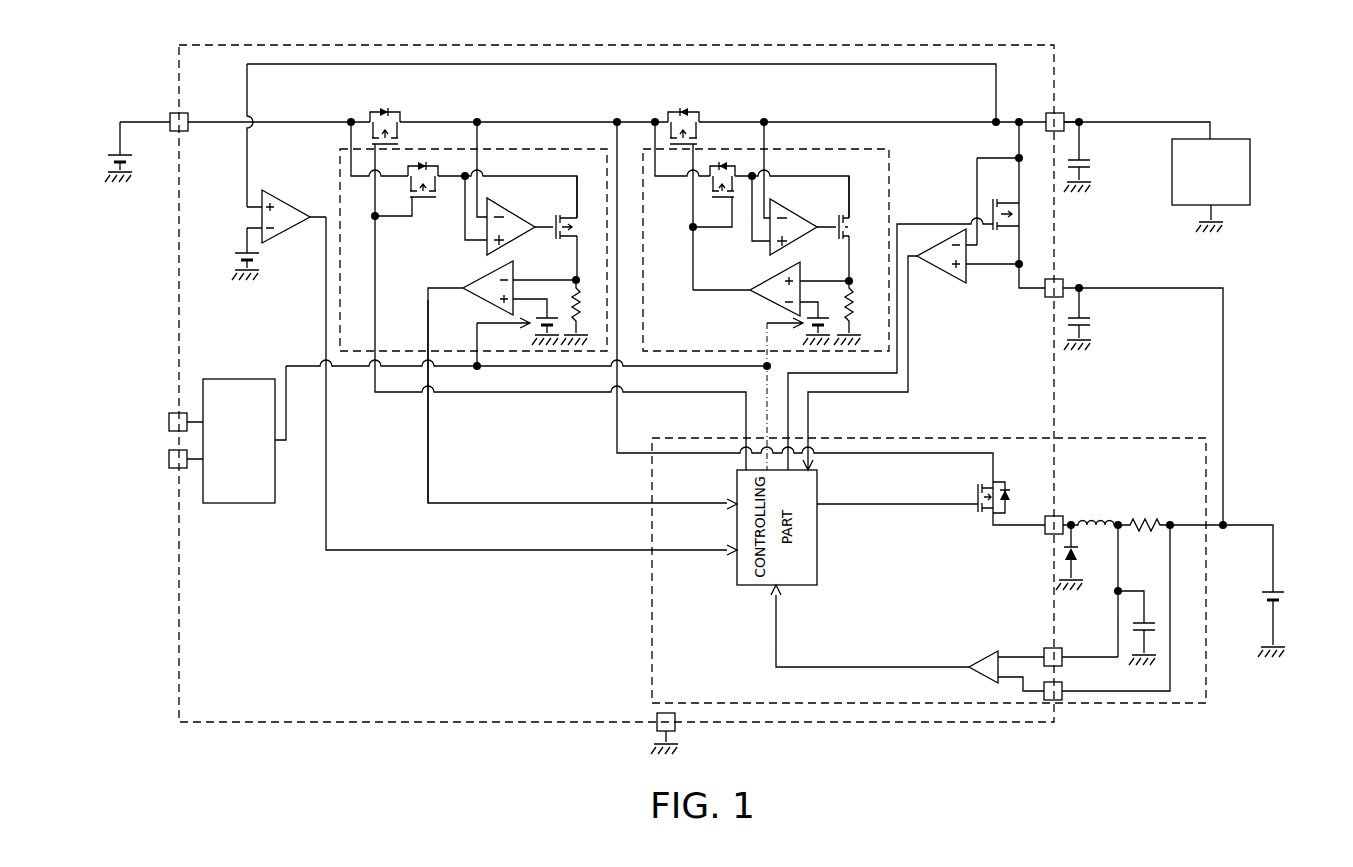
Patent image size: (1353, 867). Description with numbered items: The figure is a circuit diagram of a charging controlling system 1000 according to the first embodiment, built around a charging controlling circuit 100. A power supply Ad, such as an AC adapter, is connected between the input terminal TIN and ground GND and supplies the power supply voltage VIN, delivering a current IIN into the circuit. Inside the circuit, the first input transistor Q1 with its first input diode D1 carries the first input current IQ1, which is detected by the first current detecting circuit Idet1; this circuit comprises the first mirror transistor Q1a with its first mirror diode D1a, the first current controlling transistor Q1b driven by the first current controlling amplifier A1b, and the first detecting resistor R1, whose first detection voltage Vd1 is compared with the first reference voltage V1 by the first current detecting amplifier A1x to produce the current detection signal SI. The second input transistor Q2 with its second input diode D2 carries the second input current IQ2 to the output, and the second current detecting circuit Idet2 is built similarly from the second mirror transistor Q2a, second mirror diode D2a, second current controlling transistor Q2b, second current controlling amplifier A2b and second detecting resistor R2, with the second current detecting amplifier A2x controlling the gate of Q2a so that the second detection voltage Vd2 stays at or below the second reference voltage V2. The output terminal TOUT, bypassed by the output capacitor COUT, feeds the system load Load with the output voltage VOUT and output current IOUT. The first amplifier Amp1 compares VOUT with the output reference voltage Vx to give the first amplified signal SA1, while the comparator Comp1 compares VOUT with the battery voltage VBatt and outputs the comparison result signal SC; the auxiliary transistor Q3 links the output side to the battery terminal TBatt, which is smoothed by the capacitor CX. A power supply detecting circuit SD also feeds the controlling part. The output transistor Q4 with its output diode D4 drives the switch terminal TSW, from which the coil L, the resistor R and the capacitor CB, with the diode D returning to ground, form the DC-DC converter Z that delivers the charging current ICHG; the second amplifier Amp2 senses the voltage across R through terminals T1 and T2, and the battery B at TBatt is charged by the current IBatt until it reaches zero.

The charging controlling circuit 100 is at (178, 62).
The charging controlling system 1000 is at (788, 767).
The current from the power supply IIN is at (150, 93).
The power supply Ad is at (117, 153).
The power supply voltage VIN is at (145, 108).
The input terminal TIN is at (178, 131).
The first amplifier Amp1 is at (284, 189).
The output reference voltage Vx is at (233, 254).
The first input diode D1 is at (380, 110).
The first input current IQ1 is at (395, 98).
The first mirror diode D1a is at (426, 162).
The first input transistor Q1 is at (399, 130).
The first current detecting circuit Idet1 is at (514, 149).
The first current controlling amplifier A1b is at (502, 198).
The first current controlling transistor Q1b is at (553, 228).
The first mirror transistor Q1a is at (413, 196).
The first current detecting amplifier A1x is at (480, 268).
The first detection voltage Vd1 is at (544, 269).
The first reference voltage V1 is at (526, 330).
The first detecting resistor R1 is at (585, 314).
The second input diode D2 is at (680, 110).
The second input current IQ2 is at (695, 98).
The second mirror diode D2a is at (727, 163).
The second input transistor Q2 is at (698, 130).
The second current detecting circuit Idet2 is at (796, 149).
The second current controlling amplifier A2b is at (786, 199).
The second current controlling transistor Q2b is at (834, 228).
The second mirror transistor Q2a is at (714, 196).
The second current detecting amplifier A2x is at (768, 270).
The second detection voltage Vd2 is at (824, 269).
The second reference voltage V2 is at (806, 382).
The second detecting resistor R2 is at (857, 315).
The power supply detecting circuit SD is at (240, 379).
The first amplified signal SA1 is at (531, 386).
The current detection signal SI is at (438, 401).
The comparison result signal SC is at (873, 363).
The auxiliary transistor Q3 is at (998, 201).
The comparator Comp1 is at (943, 278).
The output terminal TOUT is at (1056, 113).
The output voltage VOUT is at (1093, 110).
The output current IOUT is at (1208, 110).
The output capacitor COUT is at (1091, 162).
The system load Load is at (1250, 172).
The battery terminal TBatt is at (1056, 279).
The battery voltage VBatt is at (1143, 392).
The smoothing capacitor CX is at (1091, 322).
The output transistor Q4 is at (931, 503).
The output diode D4 is at (1010, 496).
The switch terminal TSW is at (1055, 516).
The coil L is at (1092, 520).
The charging current ICHG is at (1168, 511).
The resistor R is at (1148, 550).
The charging current IBatt is at (1292, 510).
The battery B is at (1284, 596).
The diode D is at (1079, 552).
The capacitor CB is at (1156, 624).
The second amplifier Amp2 is at (986, 651).
The terminal T1 is at (1052, 648).
The terminal T2 is at (1054, 700).
The DC-DC converter Z is at (933, 703).
The ground GND is at (668, 746).